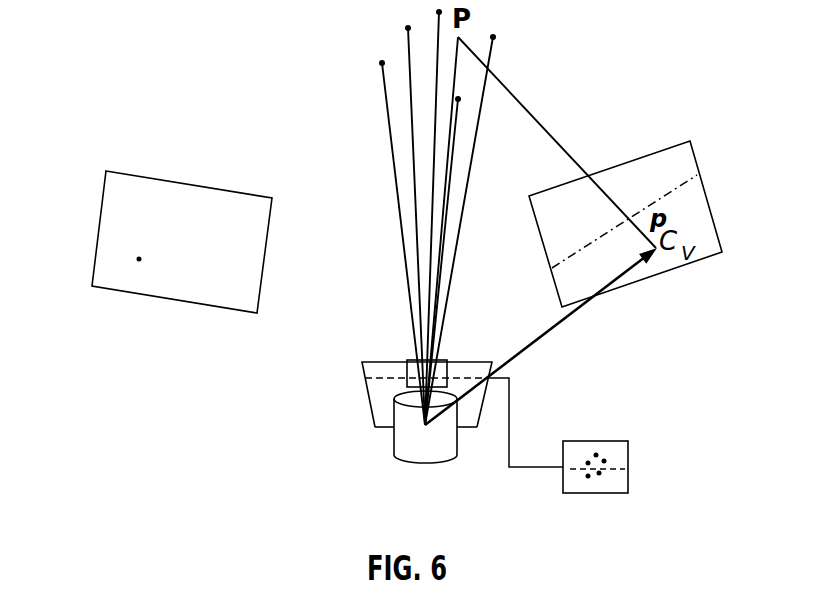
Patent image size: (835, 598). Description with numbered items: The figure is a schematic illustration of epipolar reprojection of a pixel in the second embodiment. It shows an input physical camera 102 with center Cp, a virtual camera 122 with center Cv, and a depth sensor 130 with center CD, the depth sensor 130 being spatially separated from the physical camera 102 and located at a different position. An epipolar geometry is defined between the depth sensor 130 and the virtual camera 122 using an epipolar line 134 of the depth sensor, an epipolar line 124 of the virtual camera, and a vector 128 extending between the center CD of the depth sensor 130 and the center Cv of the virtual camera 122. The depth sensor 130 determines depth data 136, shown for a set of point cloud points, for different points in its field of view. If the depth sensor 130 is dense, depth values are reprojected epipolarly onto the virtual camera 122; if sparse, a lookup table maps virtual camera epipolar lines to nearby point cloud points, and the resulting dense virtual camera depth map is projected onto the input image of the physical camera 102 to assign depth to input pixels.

The physical camera 102 is at (97, 230).
The virtual camera 122 is at (707, 200).
The epipolar line of the virtual camera 124 is at (670, 187).
The vector 128 is at (578, 312).
The depth sensor 130 is at (392, 437).
The epipolar line of the depth sensor 134 is at (378, 377).
The depth data 136 is at (628, 462).